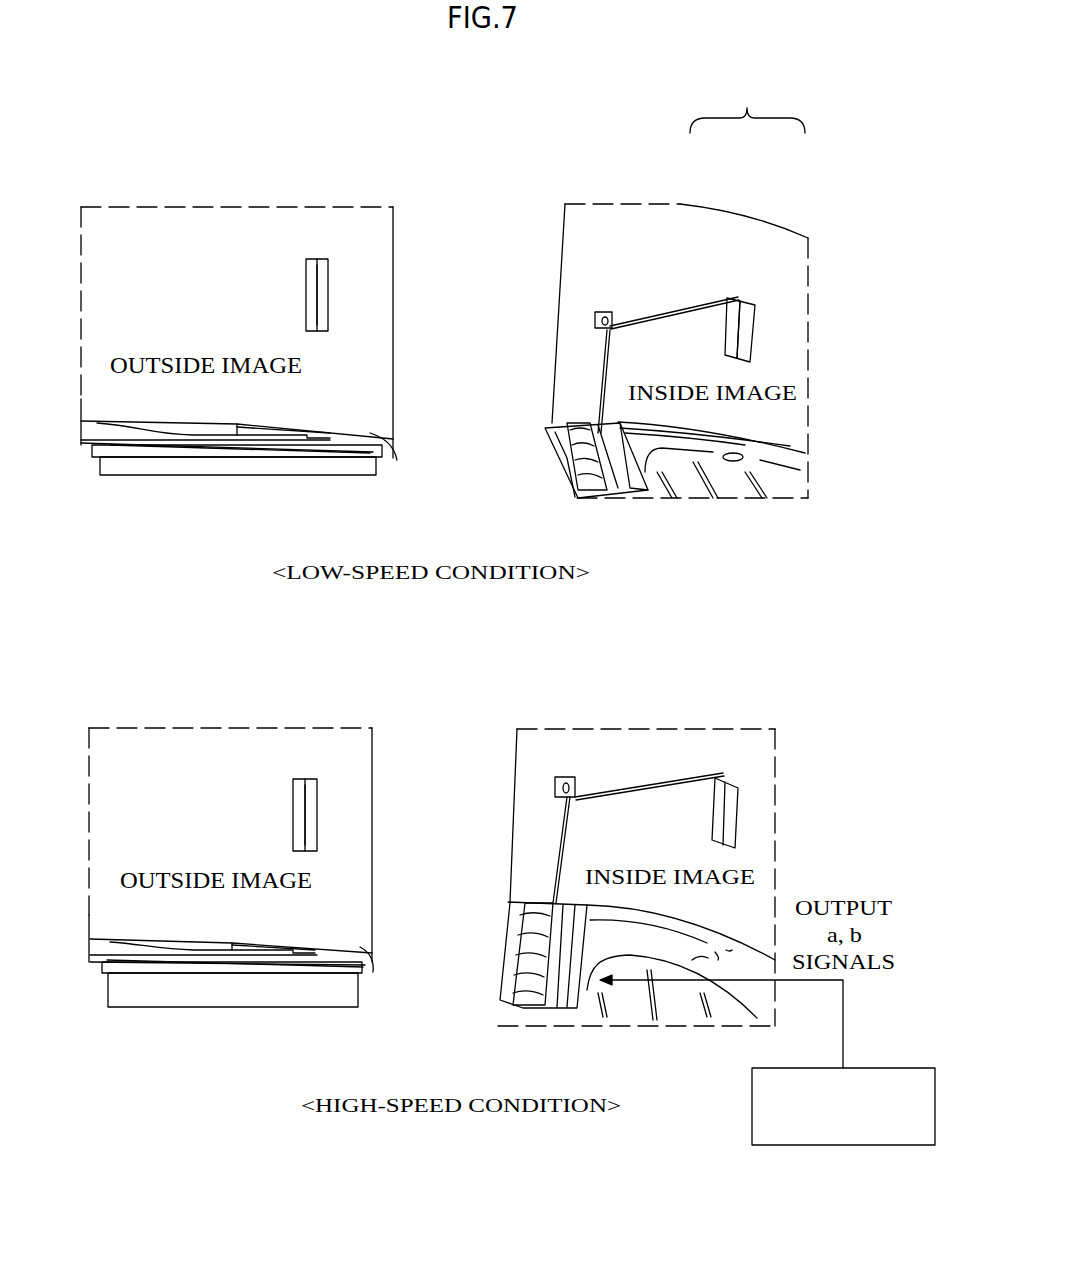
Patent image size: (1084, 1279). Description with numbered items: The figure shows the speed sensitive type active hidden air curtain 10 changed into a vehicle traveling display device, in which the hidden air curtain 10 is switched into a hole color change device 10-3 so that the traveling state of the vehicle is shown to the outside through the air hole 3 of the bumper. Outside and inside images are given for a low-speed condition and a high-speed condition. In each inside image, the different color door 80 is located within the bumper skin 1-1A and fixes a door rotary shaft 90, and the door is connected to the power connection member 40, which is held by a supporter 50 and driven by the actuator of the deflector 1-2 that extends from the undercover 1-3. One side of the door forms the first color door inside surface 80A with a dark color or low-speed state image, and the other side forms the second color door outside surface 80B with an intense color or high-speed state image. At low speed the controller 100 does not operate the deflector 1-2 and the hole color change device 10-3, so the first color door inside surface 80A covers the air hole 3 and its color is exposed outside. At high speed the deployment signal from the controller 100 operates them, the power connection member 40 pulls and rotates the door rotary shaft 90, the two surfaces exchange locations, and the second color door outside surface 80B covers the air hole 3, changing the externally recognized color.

The bumper skin 1-1A is at (108, 235).
The deflector 1-2 is at (160, 467).
The undercover 1-3 is at (780, 482).
The air hole 3 is at (305, 283).
The hidden air curtain 10 is at (818, 397).
The hole color change device 10-3 is at (747, 107).
The power connection member 40 is at (600, 375).
The supporter 50 is at (595, 315).
The different color door 80 is at (753, 313).
The first color door inside surface 80A is at (338, 263).
The second color door outside surface 80B is at (317, 783).
The door rotary shaft 90 is at (712, 308).
The controller 100 is at (842, 1147).